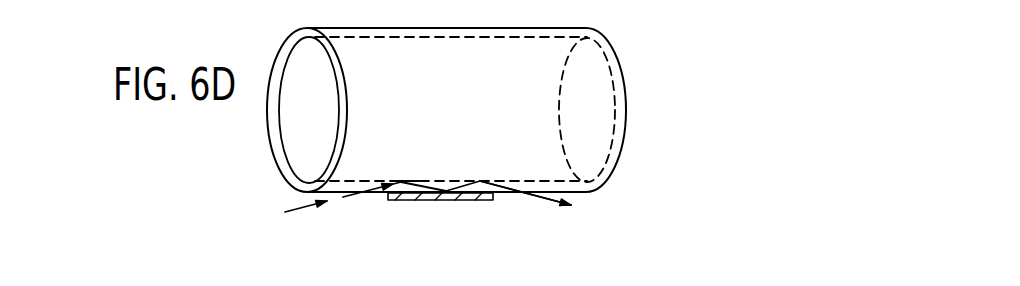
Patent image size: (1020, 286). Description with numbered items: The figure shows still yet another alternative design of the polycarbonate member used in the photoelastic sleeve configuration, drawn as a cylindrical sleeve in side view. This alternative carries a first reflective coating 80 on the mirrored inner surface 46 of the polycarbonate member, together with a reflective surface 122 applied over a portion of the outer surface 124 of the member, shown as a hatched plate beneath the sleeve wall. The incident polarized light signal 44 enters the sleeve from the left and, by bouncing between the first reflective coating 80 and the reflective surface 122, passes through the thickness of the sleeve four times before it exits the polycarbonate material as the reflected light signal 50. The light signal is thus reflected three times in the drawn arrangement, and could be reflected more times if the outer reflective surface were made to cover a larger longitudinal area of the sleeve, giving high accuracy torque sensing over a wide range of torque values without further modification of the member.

The outer surface 124 is at (656, 212).
The reflective surface 122 is at (465, 204).
The incident polarized light signal 44 is at (313, 239).
The mirrored inner surface 46 is at (494, 181).
The reflected light signal 50 is at (518, 237).
The first reflective coating 80 is at (417, 182).